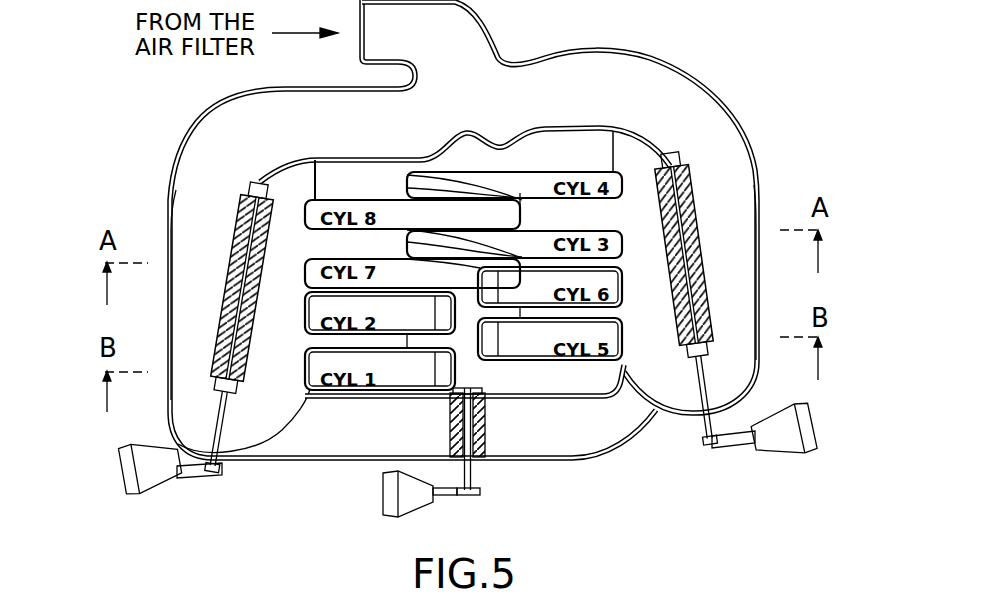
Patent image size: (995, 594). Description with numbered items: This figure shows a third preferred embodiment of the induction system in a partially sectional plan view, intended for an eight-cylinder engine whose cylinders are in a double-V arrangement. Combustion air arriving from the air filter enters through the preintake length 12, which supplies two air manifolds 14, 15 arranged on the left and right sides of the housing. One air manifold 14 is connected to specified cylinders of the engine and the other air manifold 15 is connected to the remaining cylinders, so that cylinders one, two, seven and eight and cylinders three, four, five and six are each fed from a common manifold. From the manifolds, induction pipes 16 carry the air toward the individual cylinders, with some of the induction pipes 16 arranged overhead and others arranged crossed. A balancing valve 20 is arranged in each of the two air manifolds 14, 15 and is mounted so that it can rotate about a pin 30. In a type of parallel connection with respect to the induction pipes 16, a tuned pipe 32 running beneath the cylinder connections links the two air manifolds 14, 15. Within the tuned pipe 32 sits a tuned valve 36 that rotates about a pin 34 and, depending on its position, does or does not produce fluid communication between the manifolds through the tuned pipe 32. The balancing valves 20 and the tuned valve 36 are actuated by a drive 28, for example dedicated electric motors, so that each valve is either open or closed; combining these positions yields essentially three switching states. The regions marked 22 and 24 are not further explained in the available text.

The preintake length 12 is at (577, 40).
The air manifold 14 is at (197, 223).
The air manifold 15 is at (730, 258).
The induction pipes 16 is at (400, 205).
The balancing valve 20 is at (210, 378).
The outer chamber 22 is at (184, 286).
The inner chamber 24 is at (267, 351).
The drive 28 is at (160, 477).
The pin 30 is at (230, 413).
The tuned pipe 32 is at (557, 437).
The pin 34 is at (472, 473).
The tuned valve 36 is at (485, 438).